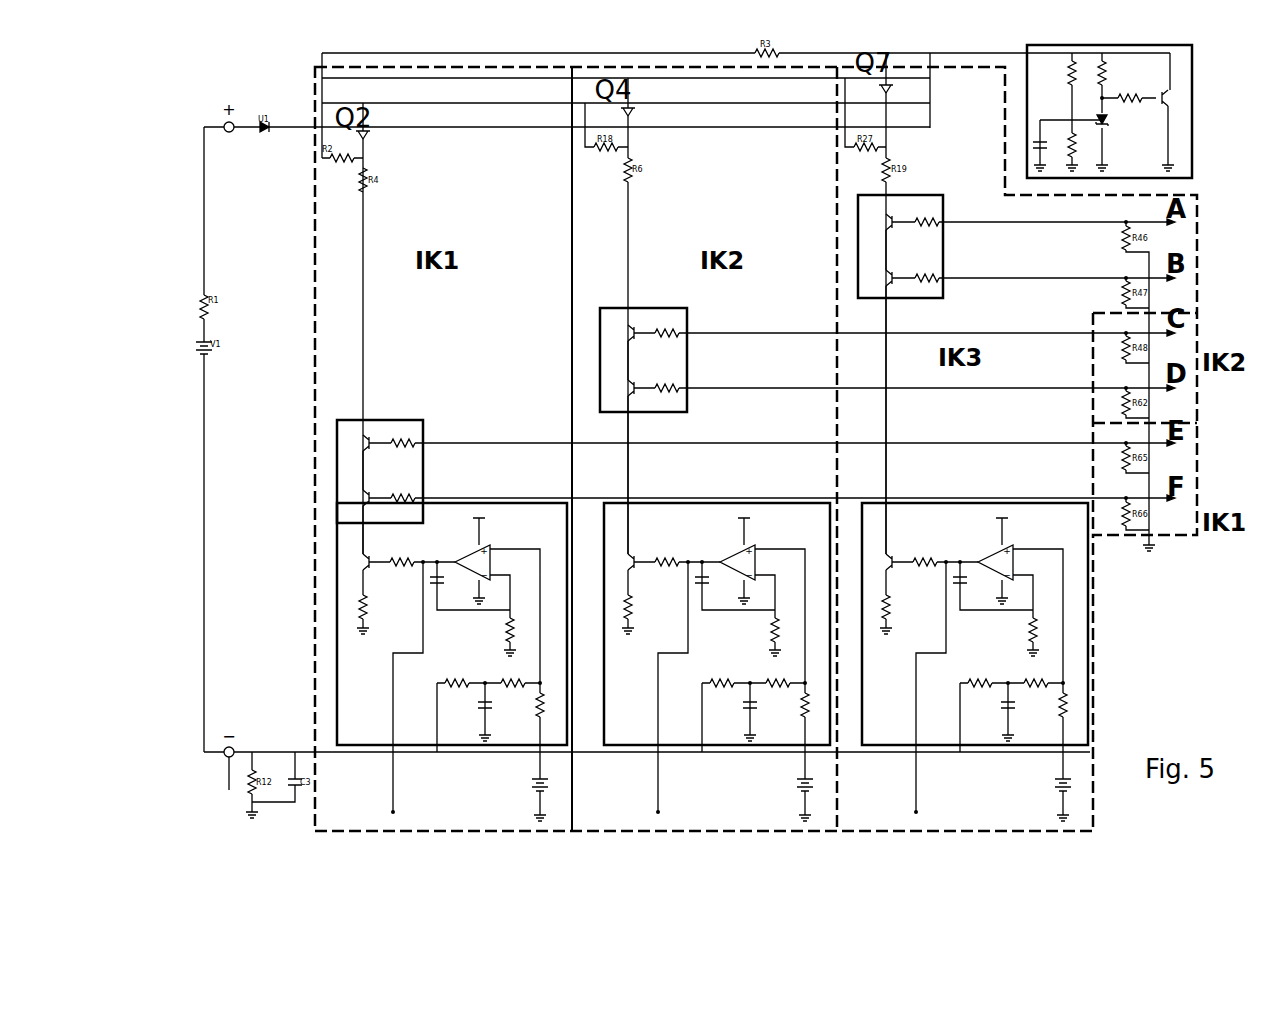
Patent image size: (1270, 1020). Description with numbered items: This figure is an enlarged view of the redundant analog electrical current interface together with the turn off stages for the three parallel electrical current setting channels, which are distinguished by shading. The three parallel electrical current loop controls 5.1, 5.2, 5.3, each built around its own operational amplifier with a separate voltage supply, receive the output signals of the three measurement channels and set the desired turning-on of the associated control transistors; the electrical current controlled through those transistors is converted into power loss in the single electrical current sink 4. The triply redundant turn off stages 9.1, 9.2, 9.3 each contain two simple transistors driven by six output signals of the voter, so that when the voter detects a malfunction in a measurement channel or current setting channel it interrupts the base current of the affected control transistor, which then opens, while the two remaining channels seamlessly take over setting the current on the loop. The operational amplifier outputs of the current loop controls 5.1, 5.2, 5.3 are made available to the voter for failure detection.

The electrical current sink 4 is at (1192, 98).
The turn off stage 9.1 is at (390, 420).
The turn off stage 9.2 is at (655, 308).
The turn off stage 9.3 is at (926, 195).
The electrical current loop control 5.1 is at (468, 503).
The electrical current loop control 5.2 is at (699, 503).
The electrical current loop control 5.3 is at (970, 502).